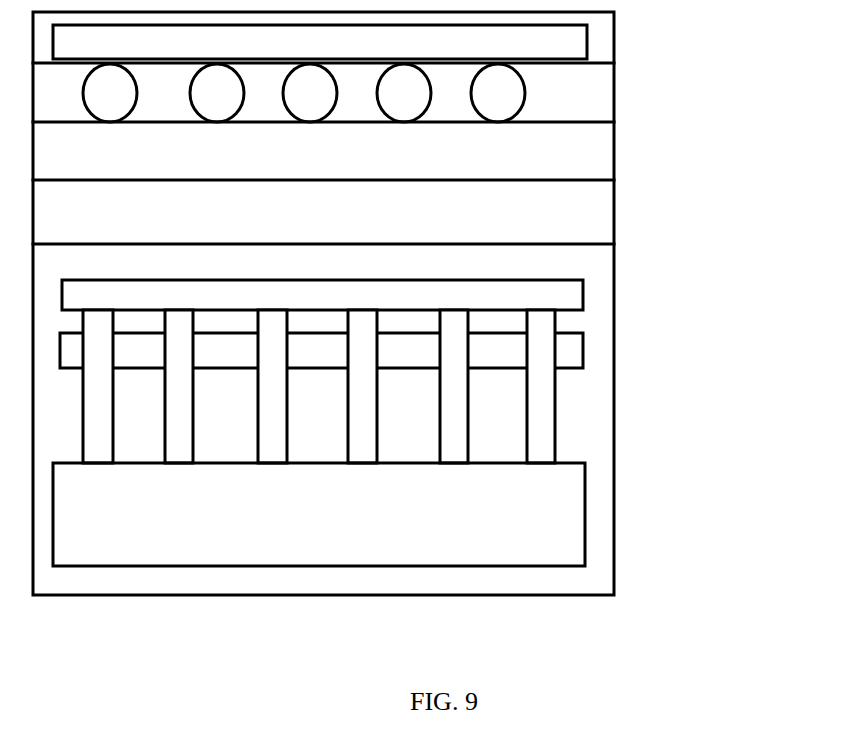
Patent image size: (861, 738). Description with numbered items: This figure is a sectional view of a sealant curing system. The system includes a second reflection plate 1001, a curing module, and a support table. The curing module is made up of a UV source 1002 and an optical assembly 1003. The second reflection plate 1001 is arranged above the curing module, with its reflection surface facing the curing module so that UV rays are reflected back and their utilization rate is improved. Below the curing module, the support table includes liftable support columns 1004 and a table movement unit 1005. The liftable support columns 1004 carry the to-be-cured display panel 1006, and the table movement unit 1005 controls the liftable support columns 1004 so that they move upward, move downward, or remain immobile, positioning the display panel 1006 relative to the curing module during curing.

The second reflection plate 1001 is at (572, 43).
The UV source 1002 is at (525, 95).
The optical assembly 1003 is at (572, 220).
The liftable support columns 1004 is at (583, 362).
The table movement unit 1005 is at (585, 503).
The to-be-cured display panel 1006 is at (583, 292).